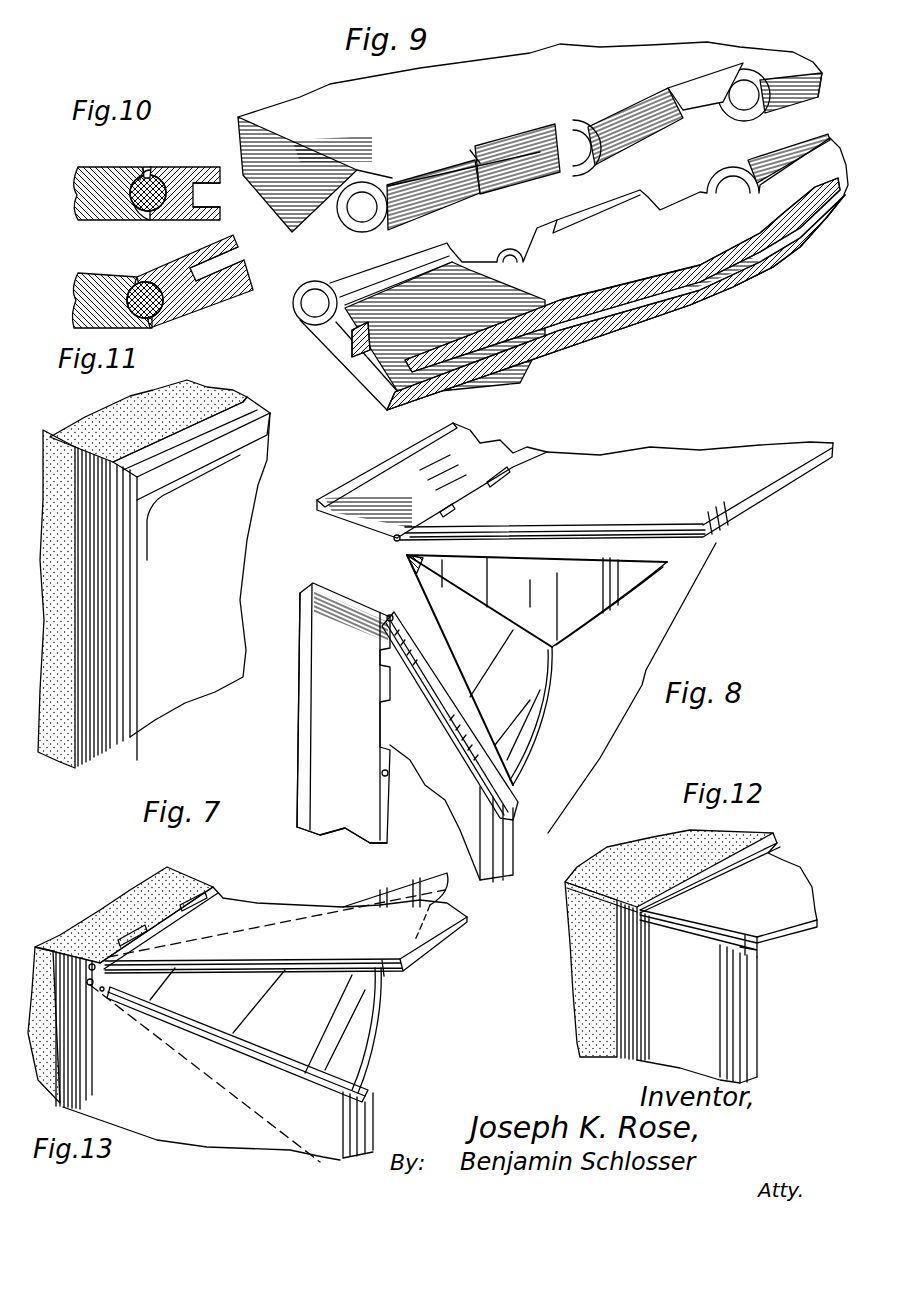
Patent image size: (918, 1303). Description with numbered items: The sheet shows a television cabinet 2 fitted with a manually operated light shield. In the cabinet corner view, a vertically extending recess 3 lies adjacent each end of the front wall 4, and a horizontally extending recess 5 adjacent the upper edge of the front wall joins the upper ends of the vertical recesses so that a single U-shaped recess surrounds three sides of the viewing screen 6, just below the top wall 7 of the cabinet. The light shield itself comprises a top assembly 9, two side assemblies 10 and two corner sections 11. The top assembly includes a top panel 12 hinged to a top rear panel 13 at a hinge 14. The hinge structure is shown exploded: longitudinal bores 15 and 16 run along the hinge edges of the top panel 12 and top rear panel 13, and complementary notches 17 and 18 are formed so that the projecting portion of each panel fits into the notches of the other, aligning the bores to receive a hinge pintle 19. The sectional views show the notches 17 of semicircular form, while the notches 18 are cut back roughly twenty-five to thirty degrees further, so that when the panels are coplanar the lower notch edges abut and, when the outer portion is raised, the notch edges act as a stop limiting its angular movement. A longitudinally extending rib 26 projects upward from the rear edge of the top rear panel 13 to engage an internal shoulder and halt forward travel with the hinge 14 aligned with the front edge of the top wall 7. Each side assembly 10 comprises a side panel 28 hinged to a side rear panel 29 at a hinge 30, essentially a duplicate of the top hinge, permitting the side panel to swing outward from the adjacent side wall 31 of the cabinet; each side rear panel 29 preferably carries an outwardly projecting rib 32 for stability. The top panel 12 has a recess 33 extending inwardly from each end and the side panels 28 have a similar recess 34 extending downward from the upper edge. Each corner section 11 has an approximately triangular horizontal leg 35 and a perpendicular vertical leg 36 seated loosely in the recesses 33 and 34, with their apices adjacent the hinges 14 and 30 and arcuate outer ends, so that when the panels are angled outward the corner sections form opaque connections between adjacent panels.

In FIG. 7, the cabinet 2 is at (57, 427).
In FIG. 13, the cabinet 2 is at (112, 887).
In FIG. 12, the cabinet 2 is at (556, 918).
In FIG. 7, the vertically extending recess 3 is at (112, 641).
In FIG. 7, the front wall 4 is at (250, 438).
In FIG. 7, the horizontally extending recess 5 is at (250, 400).
In FIG. 7, the viewing screen 6 is at (203, 584).
In FIG. 7, the top wall 7 is at (118, 411).
In FIG. 13, the top wall 7 is at (180, 871).
In FIG. 12, the top wall 7 is at (613, 860).
In FIG. 8, the top assembly 9 is at (553, 447).
In FIG. 8, the side assembly 10 is at (364, 590).
In FIG. 8, the corner section 11 is at (557, 713).
In FIG. 13, the corner section 11 is at (392, 1048).
In FIG. 12, the corner section 11 is at (700, 933).
In FIG. 9, the top panel 12 is at (330, 340).
In FIG. 10, the top panel 12 is at (185, 221).
In FIG. 11, the top panel 12 is at (197, 297).
In FIG. 8, the top panel 12 is at (643, 456).
In FIG. 13, the top panel 12 is at (450, 937).
In FIG. 12, the top panel 12 is at (782, 868).
In FIG. 9, the top rear panel 13 is at (327, 108).
In FIG. 10, the top rear panel 13 is at (88, 213).
In FIG. 11, the top rear panel 13 is at (112, 300).
In FIG. 8, the top rear panel 13 is at (483, 440).
In FIG. 8, the hinge 14 is at (500, 480).
In FIG. 13, the hinge 14 is at (94, 958).
In FIG. 9, the longitudinal bore 15 is at (340, 304).
In FIG. 9, the longitudinal bore 16 is at (370, 196).
In FIG. 9, the notch 17 is at (525, 258).
In FIG. 10, the notch 17 is at (147, 166).
In FIG. 9, the notch 18 is at (548, 135).
In FIG. 10, the notch 18 is at (140, 168).
In FIG. 10, the hinge pintle 19 is at (161, 181).
In FIG. 11, the hinge pintle 19 is at (131, 287).
In FIG. 8, the rib 26 is at (354, 488).
In FIG. 8, the side panel 28 is at (447, 820).
In FIG. 13, the side panel 28 is at (214, 1133).
In FIG. 12, the side panel 28 is at (752, 1001).
In FIG. 8, the side rear panel 29 is at (322, 826).
In FIG. 8, the hinge 30 is at (399, 607).
In FIG. 13, the hinge 30 is at (93, 996).
In FIG. 7, the side wall 31 is at (63, 780).
In FIG. 13, the side wall 31 is at (54, 1079).
In FIG. 12, the side wall 31 is at (568, 959).
In FIG. 10, the outwardly projecting rib 32 is at (214, 196).
In FIG. 11, the outwardly projecting rib 32 is at (226, 264).
In FIG. 8, the outwardly projecting rib 32 is at (298, 758).
In FIG. 9, the recess 33 is at (363, 373).
In FIG. 8, the recess 33 is at (658, 522).
In FIG. 8, the recess 34 is at (452, 712).
In FIG. 13, the recess 34 is at (237, 1044).
In FIG. 8, the horizontal leg 35 is at (630, 599).
In FIG. 13, the horizontal leg 35 is at (400, 893).
In FIG. 8, the vertical leg 36 is at (529, 745).
In FIG. 13, the vertical leg 36 is at (386, 1002).